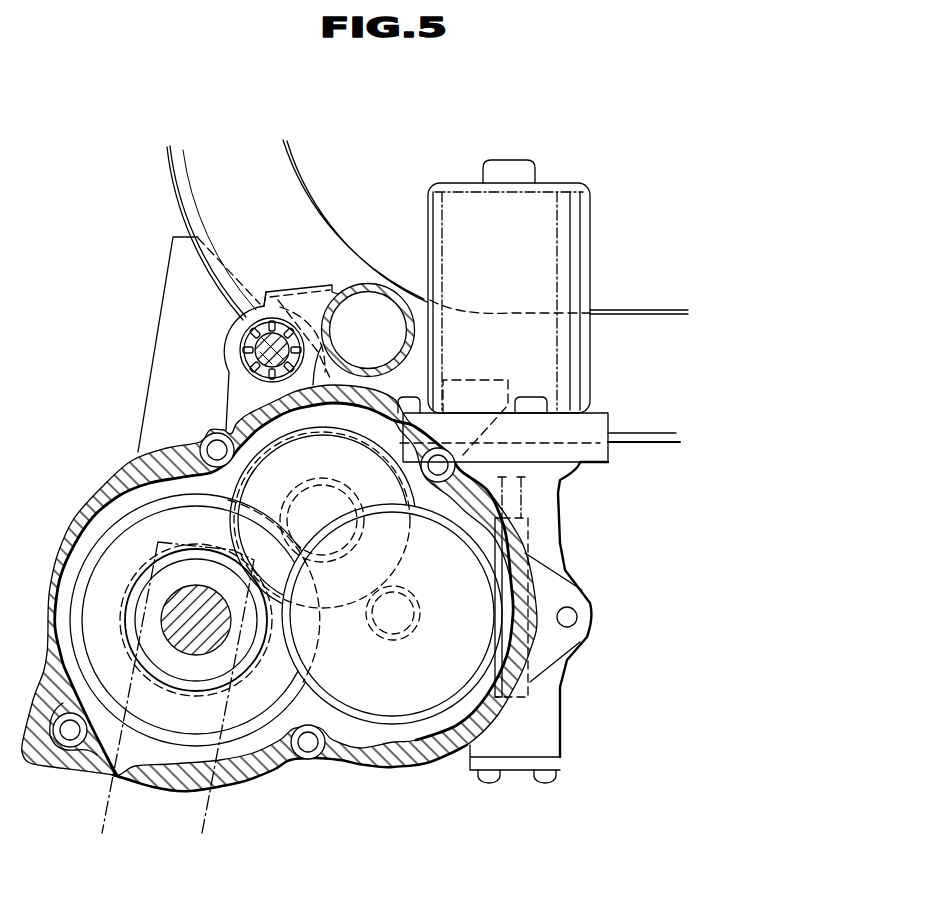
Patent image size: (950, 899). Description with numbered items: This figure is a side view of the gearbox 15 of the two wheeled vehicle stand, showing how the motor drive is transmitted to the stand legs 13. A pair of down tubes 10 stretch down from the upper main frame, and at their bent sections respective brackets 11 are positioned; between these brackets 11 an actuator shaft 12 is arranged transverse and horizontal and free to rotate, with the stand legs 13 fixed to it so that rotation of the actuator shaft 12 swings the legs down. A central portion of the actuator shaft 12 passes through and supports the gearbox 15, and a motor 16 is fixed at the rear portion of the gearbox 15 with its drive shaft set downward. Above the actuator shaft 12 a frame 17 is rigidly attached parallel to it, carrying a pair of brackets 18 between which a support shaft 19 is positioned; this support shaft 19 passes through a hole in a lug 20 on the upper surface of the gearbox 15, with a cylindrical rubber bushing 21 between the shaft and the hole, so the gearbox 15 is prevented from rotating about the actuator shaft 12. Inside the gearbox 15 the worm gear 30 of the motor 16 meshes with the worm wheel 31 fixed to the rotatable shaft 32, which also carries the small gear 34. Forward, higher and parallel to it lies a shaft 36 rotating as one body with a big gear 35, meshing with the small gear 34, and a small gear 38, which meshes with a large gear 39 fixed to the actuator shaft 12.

The down tubes 10 is at (303, 185).
The brackets 11 is at (152, 366).
The actuator shaft 12 is at (160, 619).
The stand legs 13 is at (112, 775).
The gearbox 15 is at (75, 530).
The motor 16 is at (592, 237).
The frame 17 is at (380, 285).
The brackets 18 is at (310, 300).
The support shaft 19 is at (276, 333).
The lug 20 is at (230, 386).
The rubber bushing 21 is at (240, 346).
The worm gear 30 is at (498, 572).
The worm wheel 31 is at (415, 725).
The shaft 32 is at (396, 625).
The small gear 34 is at (417, 600).
The big gear 35 is at (362, 437).
The shaft 36 is at (337, 493).
The small gear 38 is at (302, 485).
The large gear 39 is at (113, 520).